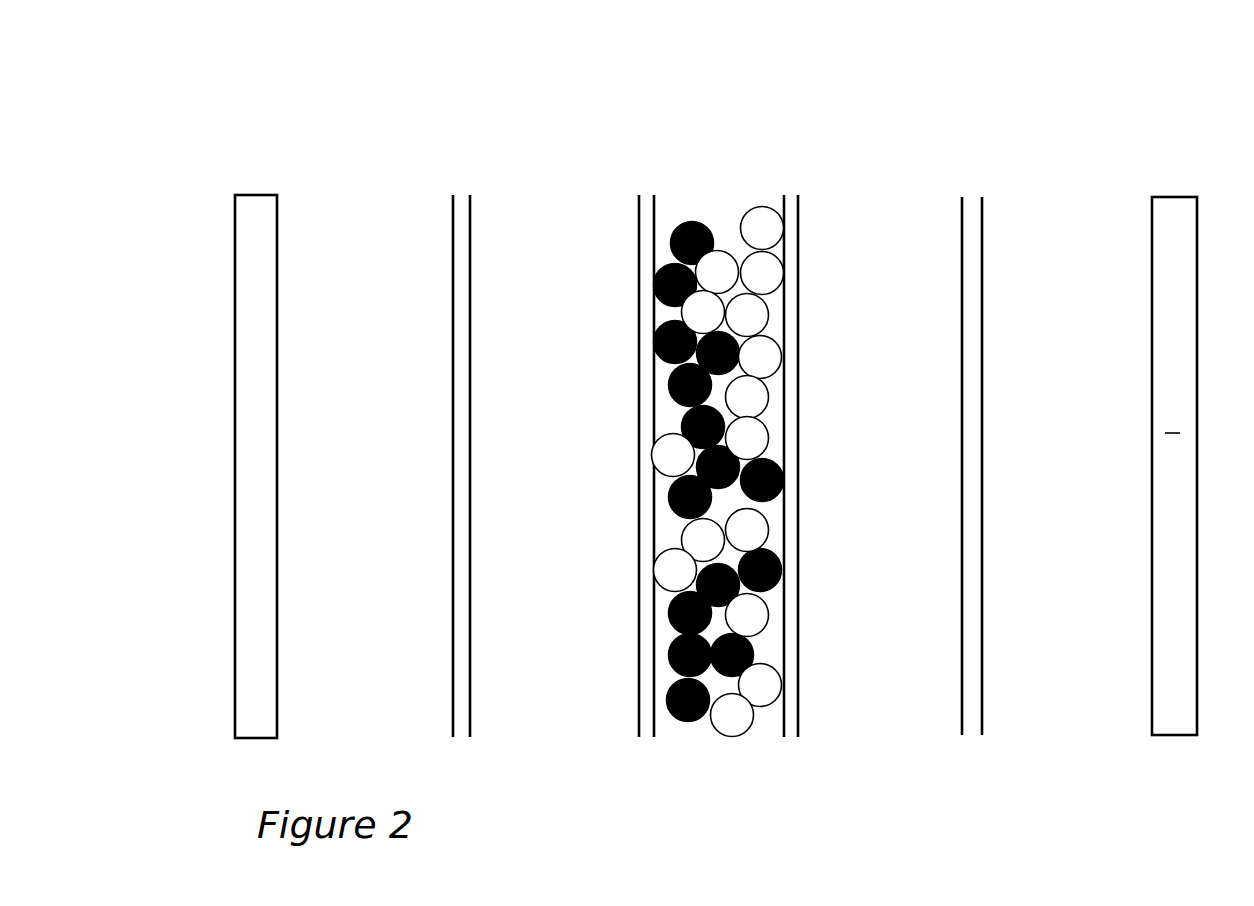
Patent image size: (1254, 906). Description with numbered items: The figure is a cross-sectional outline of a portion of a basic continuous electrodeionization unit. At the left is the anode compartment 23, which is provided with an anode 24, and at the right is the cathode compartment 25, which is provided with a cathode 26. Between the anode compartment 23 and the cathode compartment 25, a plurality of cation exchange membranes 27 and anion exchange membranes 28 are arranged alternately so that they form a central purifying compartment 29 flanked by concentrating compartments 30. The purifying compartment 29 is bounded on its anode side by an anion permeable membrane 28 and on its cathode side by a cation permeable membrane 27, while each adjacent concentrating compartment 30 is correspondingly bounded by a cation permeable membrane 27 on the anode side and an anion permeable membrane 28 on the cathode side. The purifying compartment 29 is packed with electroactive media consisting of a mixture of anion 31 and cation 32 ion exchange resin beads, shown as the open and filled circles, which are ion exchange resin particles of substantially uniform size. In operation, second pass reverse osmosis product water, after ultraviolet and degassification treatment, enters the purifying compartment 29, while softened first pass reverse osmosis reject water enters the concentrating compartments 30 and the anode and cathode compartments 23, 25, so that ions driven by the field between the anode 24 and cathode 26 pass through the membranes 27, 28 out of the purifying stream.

The anode compartment 23 is at (362, 237).
The anode 24 is at (255, 195).
The cathode compartment 25 is at (1075, 238).
The cathode 26 is at (1168, 197).
The cation exchange membrane 27 is at (462, 195).
The anion exchange membrane 28 is at (640, 225).
The purifying compartment 29 is at (717, 207).
The concentrating compartment 30 is at (568, 223).
The anion ion exchange resin beads 31 is at (767, 320).
The cation ion exchange resin beads 32 is at (670, 245).